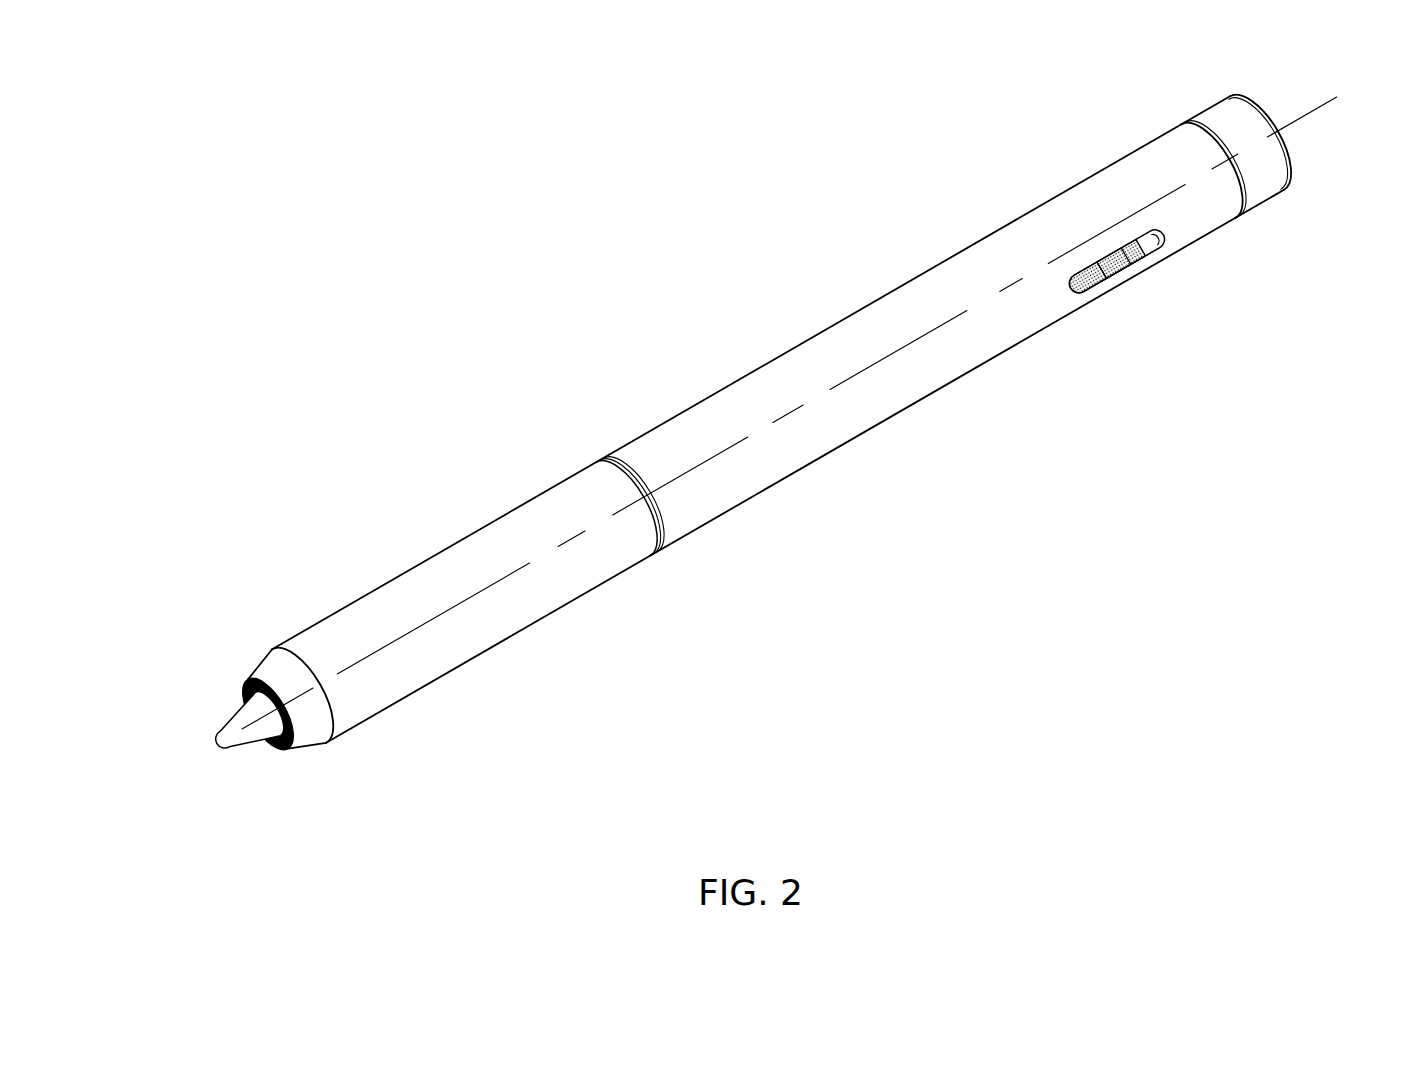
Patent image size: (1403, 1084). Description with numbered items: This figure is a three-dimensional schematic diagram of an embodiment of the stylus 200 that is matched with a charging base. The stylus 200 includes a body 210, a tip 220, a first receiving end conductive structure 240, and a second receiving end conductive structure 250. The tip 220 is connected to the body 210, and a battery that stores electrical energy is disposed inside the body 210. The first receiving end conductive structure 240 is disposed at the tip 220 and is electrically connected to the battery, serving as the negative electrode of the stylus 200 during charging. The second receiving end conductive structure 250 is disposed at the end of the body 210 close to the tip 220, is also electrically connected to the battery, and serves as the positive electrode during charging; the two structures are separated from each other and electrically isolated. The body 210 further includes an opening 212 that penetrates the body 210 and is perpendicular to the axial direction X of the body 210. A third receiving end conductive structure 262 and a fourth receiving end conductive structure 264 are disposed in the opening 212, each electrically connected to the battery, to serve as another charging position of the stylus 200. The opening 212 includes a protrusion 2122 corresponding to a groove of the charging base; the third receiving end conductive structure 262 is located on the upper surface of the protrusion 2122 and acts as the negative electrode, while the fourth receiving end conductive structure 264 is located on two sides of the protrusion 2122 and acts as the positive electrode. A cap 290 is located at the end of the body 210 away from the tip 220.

The stylus 200 is at (614, 308).
The body 210 is at (790, 350).
The opening 212 is at (1121, 307).
The protrusion 2122 is at (1124, 274).
The tip 220 is at (224, 718).
The first receiving end conductive structure 240 is at (278, 751).
The second receiving end conductive structure 250 is at (247, 688).
The third receiving end conductive structure 262 is at (1100, 263).
The fourth receiving end conductive structure 264 is at (1121, 250).
The cap 290 is at (1292, 158).
The axial direction X is at (457, 605).